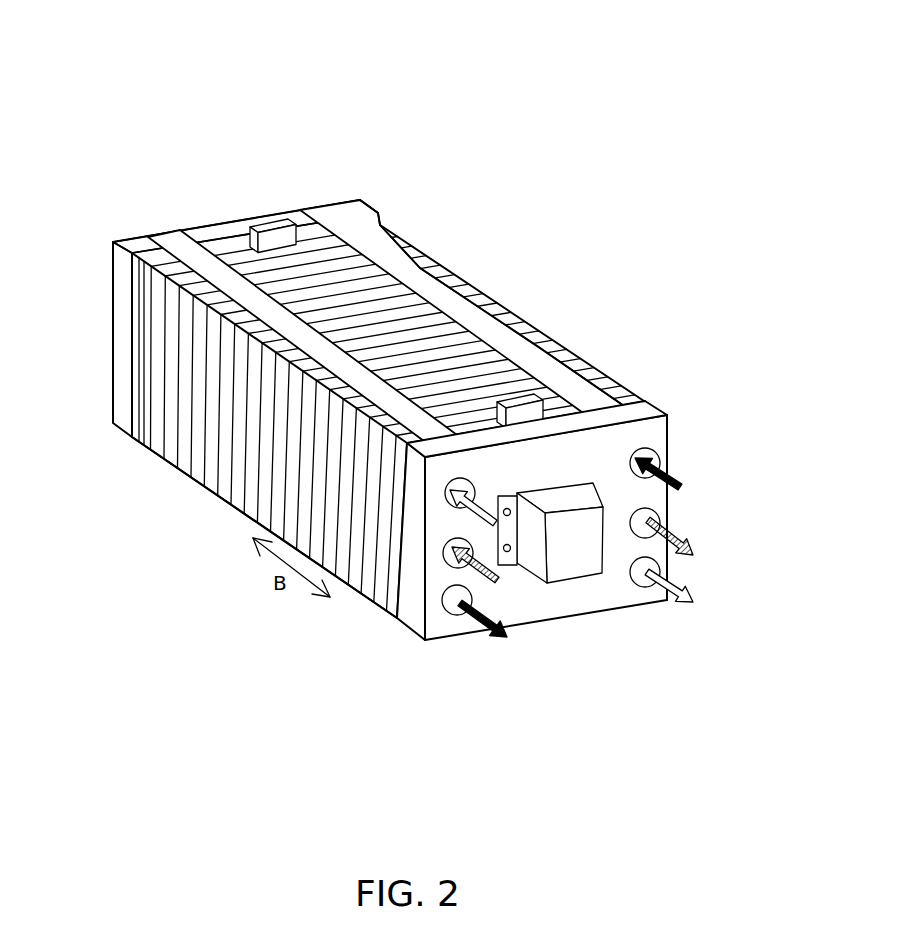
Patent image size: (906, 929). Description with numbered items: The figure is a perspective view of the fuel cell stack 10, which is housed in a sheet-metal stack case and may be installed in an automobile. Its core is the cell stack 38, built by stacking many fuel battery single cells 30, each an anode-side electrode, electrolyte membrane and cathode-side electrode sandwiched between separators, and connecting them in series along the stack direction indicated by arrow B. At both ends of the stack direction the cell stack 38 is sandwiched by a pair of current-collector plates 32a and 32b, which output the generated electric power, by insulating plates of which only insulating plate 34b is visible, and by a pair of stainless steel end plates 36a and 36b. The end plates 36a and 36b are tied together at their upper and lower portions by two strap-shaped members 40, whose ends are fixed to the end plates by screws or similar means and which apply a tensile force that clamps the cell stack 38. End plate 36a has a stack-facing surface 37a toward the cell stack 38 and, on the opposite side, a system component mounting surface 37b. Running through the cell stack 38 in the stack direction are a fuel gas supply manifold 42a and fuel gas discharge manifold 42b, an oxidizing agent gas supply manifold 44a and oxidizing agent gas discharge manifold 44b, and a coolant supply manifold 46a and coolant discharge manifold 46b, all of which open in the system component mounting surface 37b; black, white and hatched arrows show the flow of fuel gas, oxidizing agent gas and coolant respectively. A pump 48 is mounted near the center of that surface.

The fuel cell stack 10 is at (512, 148).
The fuel battery single cell 30 is at (225, 465).
The current-collector plate 32a is at (520, 400).
The current-collector plate 32b is at (266, 224).
The insulating plate 34b is at (137, 417).
The end plate 36a is at (410, 610).
The end plate 36b is at (120, 338).
The stack-facing surface 37a is at (655, 412).
The system component mounting surface 37b is at (660, 432).
The cell stack 38 is at (487, 297).
The strap-shaped member 40 is at (200, 253).
The fuel gas supply manifold 42a is at (660, 452).
The fuel gas discharge manifold 42b is at (468, 594).
The oxidizing agent gas supply manifold 44a is at (447, 493).
The oxidizing agent gas discharge manifold 44b is at (655, 566).
The coolant supply manifold 46a is at (455, 560).
The coolant discharge manifold 46b is at (658, 520).
The pump 48 is at (577, 580).